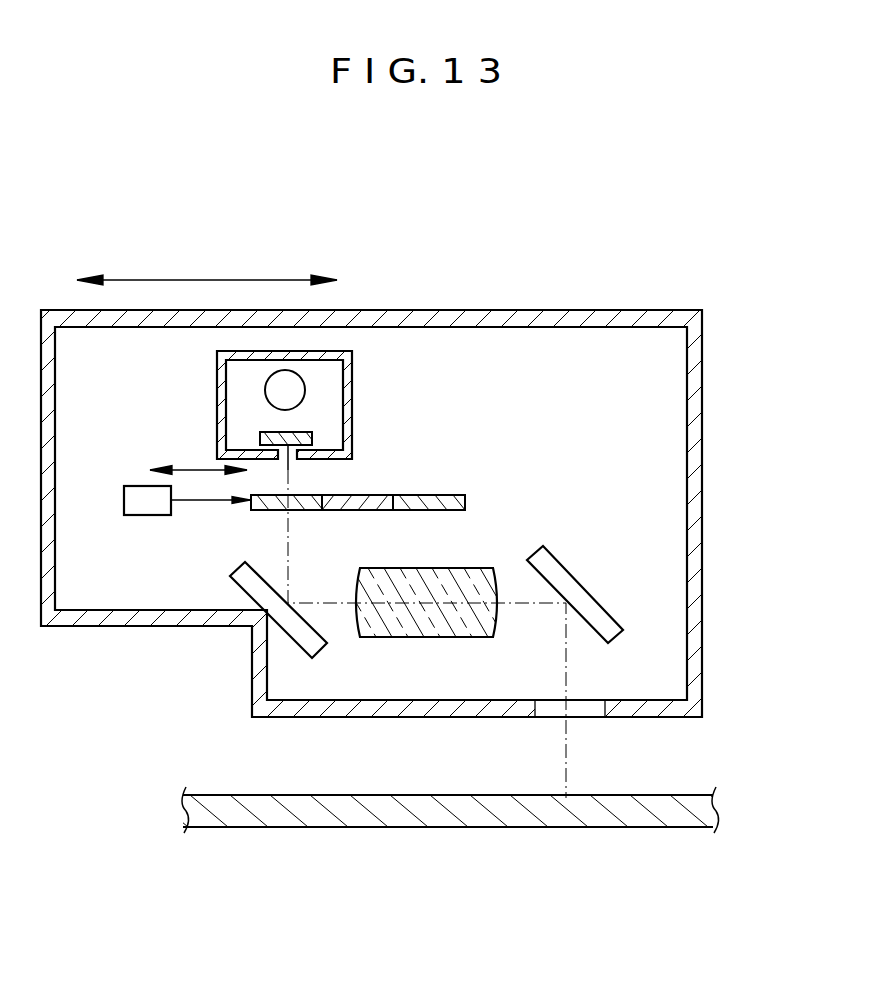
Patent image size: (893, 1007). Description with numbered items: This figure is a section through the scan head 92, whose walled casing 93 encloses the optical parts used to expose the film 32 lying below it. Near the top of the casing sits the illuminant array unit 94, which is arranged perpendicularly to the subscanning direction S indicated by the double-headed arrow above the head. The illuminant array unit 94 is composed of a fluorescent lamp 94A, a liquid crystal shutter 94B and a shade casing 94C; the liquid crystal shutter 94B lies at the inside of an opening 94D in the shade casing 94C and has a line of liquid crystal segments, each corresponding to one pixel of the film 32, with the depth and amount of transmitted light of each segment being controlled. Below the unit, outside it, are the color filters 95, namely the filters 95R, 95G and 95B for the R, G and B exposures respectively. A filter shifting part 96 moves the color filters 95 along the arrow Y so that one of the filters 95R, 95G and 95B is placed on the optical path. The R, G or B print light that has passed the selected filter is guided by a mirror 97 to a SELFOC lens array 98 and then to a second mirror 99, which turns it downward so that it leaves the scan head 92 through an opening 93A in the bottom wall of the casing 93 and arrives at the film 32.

The scan head 92 is at (446, 518).
The casing 93 is at (446, 546).
The opening 93A is at (585, 710).
The illuminant array unit 94 is at (391, 413).
The fluorescent lamp 94A is at (285, 389).
The liquid crystal shutter 94B is at (312, 437).
The shade casing 94C is at (217, 368).
The opening 94D is at (290, 461).
The color filters 95 is at (375, 524).
The filter 95R is at (272, 510).
The filter 95G is at (340, 505).
The filter 95B is at (417, 505).
The filter shifting part 96 is at (152, 490).
The mirror 97 is at (248, 592).
The SELFOC lens array 98 is at (440, 630).
The mirror 99 is at (560, 582).
The film 32 is at (283, 815).
The subscanning direction S is at (222, 278).
The arrow Y is at (205, 472).